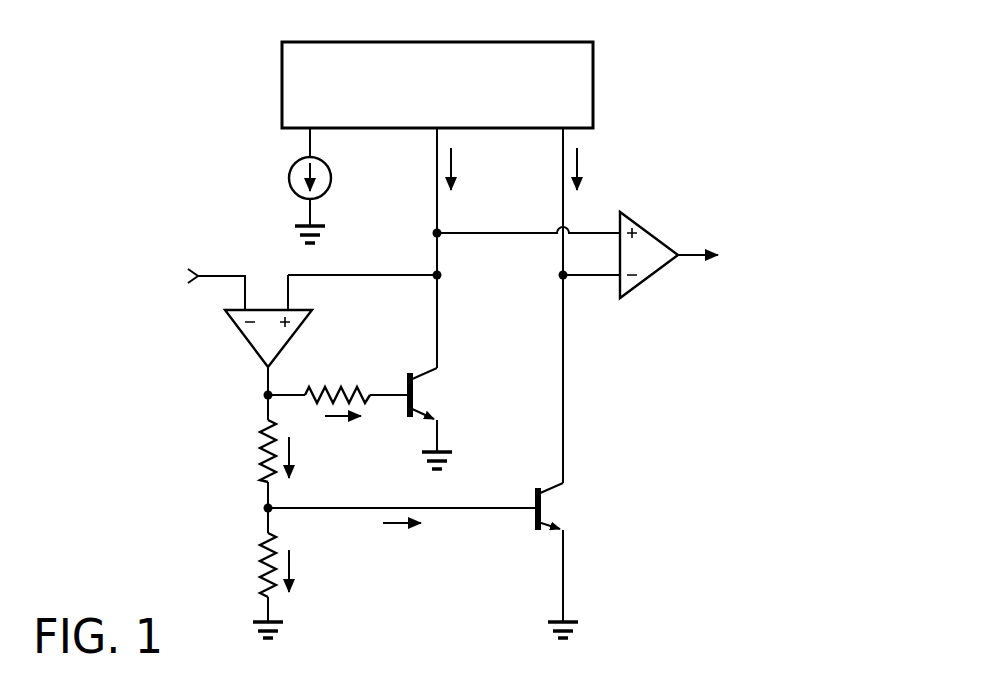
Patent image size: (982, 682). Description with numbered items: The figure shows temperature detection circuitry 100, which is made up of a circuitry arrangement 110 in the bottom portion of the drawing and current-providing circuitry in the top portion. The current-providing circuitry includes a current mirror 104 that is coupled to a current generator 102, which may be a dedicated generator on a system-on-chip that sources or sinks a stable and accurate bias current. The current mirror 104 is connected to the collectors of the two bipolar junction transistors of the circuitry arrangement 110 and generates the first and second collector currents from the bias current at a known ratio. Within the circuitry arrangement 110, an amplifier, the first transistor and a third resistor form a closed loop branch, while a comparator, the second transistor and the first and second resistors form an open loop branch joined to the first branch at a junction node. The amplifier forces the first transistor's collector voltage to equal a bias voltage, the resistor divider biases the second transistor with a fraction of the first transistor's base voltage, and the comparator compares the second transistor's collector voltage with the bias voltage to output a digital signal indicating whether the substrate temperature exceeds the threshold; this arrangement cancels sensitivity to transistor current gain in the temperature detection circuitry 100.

The temperature detection circuitry 100 is at (669, 44).
The current generator 102 is at (331, 177).
The current mirror 104 is at (594, 90).
The circuitry arrangement 110 is at (646, 404).